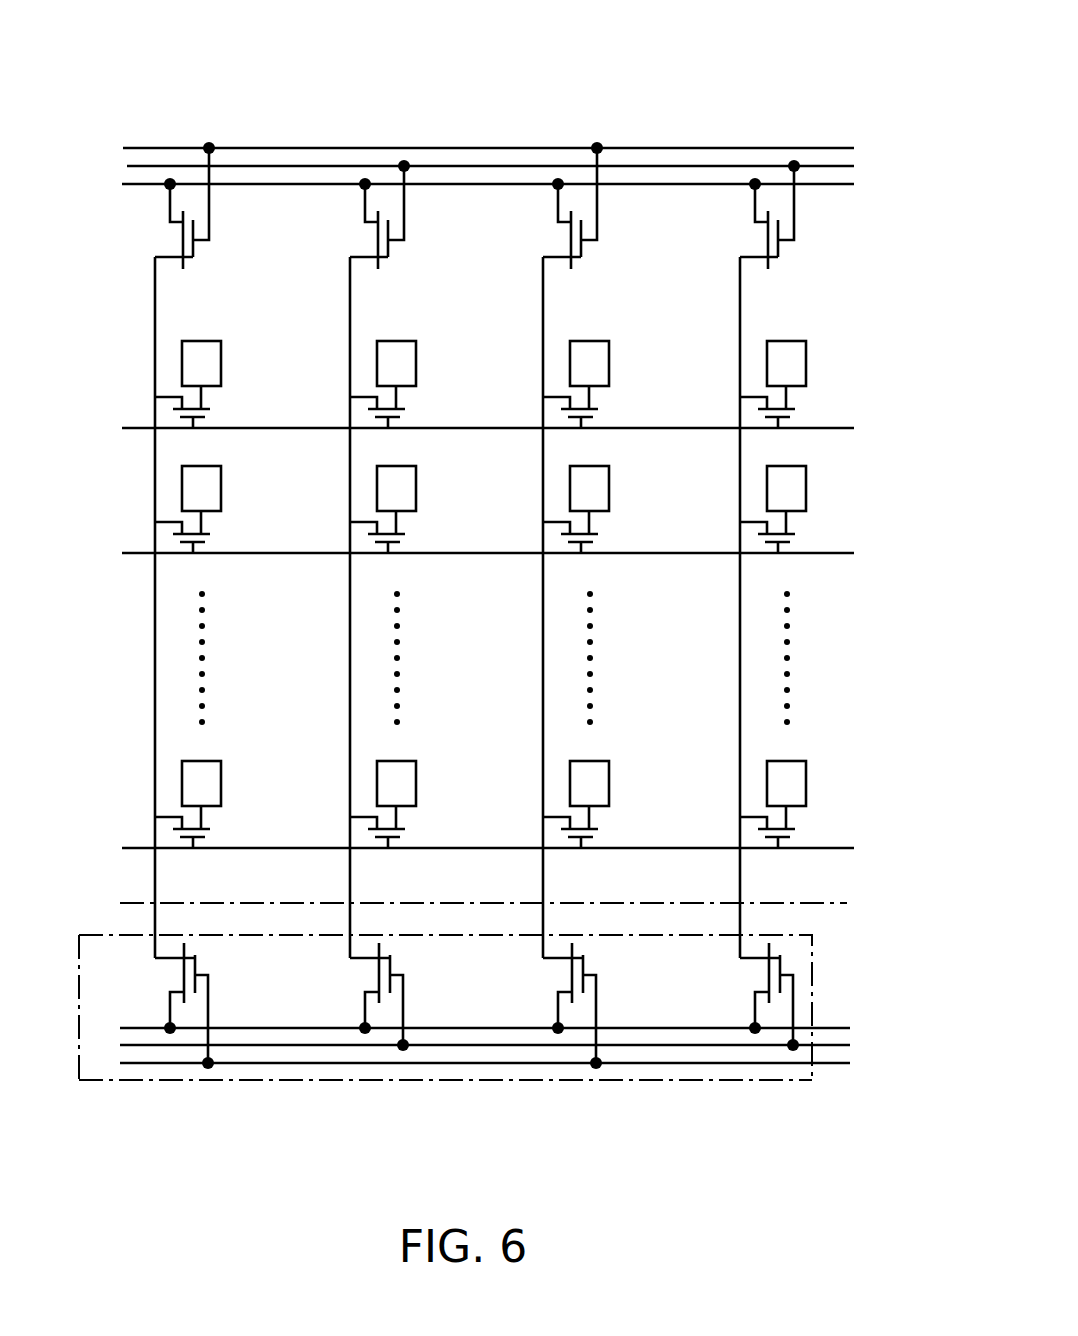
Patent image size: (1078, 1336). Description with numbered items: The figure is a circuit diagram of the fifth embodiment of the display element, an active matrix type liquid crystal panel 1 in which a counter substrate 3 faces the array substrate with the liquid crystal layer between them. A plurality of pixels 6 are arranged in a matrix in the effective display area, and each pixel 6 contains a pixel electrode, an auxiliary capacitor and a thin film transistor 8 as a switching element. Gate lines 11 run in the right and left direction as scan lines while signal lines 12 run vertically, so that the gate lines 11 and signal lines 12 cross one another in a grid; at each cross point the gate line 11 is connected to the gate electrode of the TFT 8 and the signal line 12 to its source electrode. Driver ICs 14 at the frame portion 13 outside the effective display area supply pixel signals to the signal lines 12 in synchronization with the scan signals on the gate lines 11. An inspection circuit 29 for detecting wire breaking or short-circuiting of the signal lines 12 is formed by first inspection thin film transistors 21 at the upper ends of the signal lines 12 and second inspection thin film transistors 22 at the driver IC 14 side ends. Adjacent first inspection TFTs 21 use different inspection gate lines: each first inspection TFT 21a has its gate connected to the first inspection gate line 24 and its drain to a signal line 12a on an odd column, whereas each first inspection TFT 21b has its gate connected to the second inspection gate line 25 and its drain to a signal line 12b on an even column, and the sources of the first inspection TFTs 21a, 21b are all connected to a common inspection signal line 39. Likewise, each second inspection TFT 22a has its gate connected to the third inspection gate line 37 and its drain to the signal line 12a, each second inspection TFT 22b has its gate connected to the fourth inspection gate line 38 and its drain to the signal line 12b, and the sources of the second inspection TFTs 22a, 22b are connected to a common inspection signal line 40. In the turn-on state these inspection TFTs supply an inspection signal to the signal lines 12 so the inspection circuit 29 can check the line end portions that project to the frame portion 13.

The liquid crystal panel 1 is at (563, 62).
The counter substrate 3 is at (847, 905).
The pixel 6 is at (221, 346).
The thin film transistor 8 is at (213, 406).
The gate line 11 is at (122, 428).
The signal line 12 is at (409, 600).
The signal line 12a is at (155, 257).
The signal line 12b is at (350, 257).
The frame portion 13 is at (843, 962).
The driver IC 14 is at (412, 1080).
The first inspection thin film transistor 21 is at (436, 181).
The first inspection thin film transistor 21a is at (163, 232).
The first inspection thin film transistor 21b is at (358, 232).
The second inspection thin film transistor 22 is at (438, 1036).
The second inspection thin film transistor 22a is at (169, 970).
The second inspection thin film transistor 22b is at (364, 970).
The first inspection gate line 24 is at (178, 147).
The second inspection gate line 25 is at (241, 165).
The inspection circuit 29 is at (488, 127).
The third inspection gate line 37 is at (237, 1063).
The fourth inspection gate line 38 is at (648, 1047).
The common inspection signal line 39 is at (442, 183).
The common inspection signal line 40 is at (517, 1028).